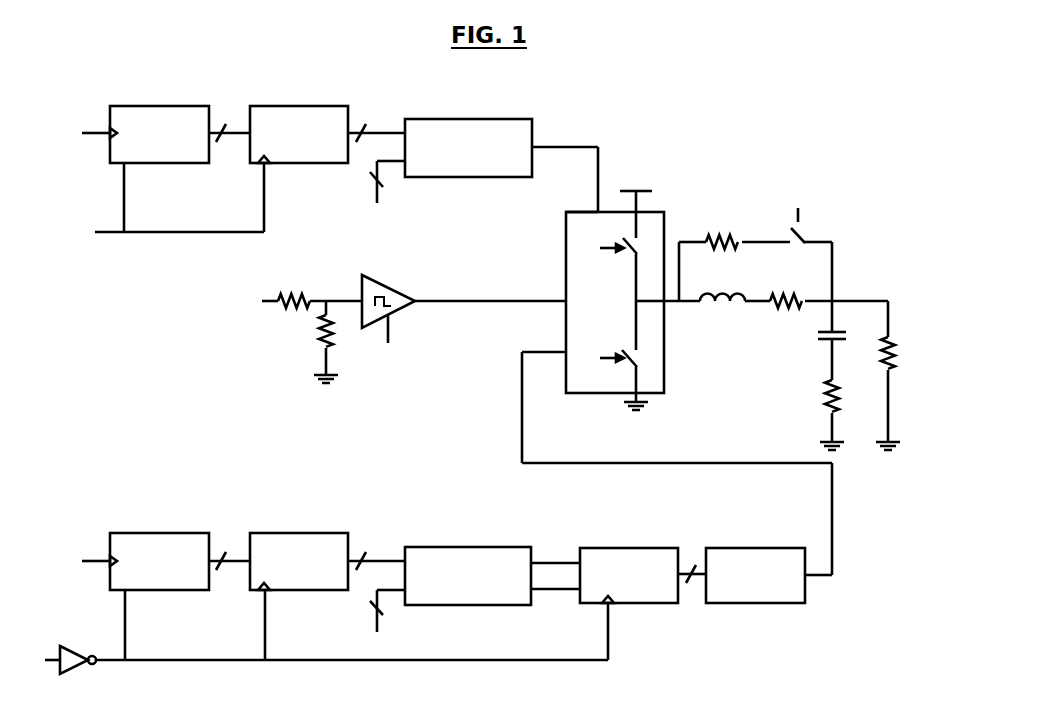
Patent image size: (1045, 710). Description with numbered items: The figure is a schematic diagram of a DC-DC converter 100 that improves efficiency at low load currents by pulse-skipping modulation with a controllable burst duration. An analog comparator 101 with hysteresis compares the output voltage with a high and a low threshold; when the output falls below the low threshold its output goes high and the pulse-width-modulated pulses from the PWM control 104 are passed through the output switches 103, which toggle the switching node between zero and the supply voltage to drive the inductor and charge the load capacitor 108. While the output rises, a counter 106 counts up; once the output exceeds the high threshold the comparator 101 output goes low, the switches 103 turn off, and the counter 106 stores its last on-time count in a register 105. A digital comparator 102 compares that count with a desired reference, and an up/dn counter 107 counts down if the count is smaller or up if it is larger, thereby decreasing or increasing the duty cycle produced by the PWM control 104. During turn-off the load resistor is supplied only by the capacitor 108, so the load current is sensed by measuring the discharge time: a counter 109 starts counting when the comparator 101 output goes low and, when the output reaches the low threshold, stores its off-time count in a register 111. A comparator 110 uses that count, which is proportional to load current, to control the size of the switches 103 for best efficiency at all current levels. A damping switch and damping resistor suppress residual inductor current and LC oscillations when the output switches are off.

The DC-DC converter 100 is at (808, 166).
The analog comparator 101 is at (370, 278).
The digital comparator 102 is at (470, 547).
The output switches 103 is at (664, 212).
The PWM control 104 is at (752, 548).
The register 105 is at (283, 533).
The counter 106 is at (150, 533).
The up/dn counter 107 is at (622, 548).
The load capacitor 108 is at (820, 354).
The counter 109 is at (135, 106).
The comparator 110 is at (470, 119).
The register 111 is at (282, 106).